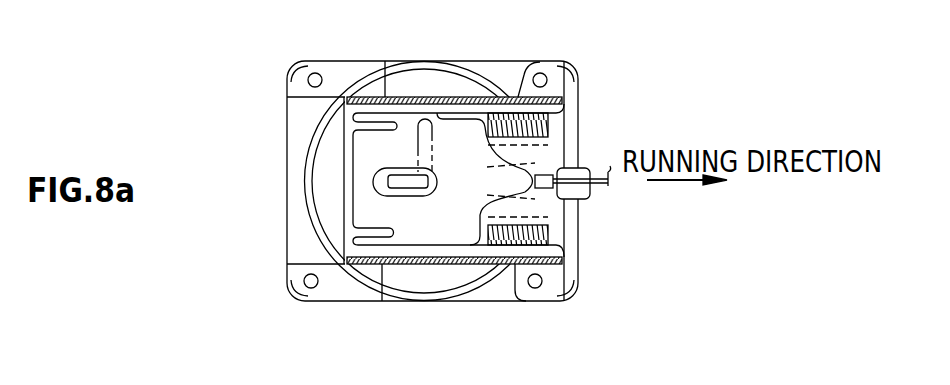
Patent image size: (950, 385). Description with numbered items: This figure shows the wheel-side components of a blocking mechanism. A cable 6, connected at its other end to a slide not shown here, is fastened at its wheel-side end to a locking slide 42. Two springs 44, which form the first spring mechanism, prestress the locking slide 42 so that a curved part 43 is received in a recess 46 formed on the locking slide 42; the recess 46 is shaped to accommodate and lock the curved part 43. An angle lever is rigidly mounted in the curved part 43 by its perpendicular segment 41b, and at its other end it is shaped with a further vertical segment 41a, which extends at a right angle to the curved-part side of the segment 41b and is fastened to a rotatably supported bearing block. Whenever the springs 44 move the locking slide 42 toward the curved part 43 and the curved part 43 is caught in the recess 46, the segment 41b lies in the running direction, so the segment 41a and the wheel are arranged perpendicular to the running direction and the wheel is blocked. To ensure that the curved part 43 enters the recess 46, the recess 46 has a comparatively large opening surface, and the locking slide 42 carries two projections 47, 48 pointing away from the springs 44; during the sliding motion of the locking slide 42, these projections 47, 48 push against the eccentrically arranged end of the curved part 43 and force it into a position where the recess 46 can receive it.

The vertical segment 41a is at (432, 150).
The perpendicular segment 41b is at (385, 190).
The locking slide 42 is at (480, 208).
The curved part 43 is at (392, 182).
The springs 44 is at (540, 123).
The recess 46 is at (443, 112).
The projection 47 is at (466, 112).
The projection 48 is at (457, 242).
The cable 6 is at (583, 193).